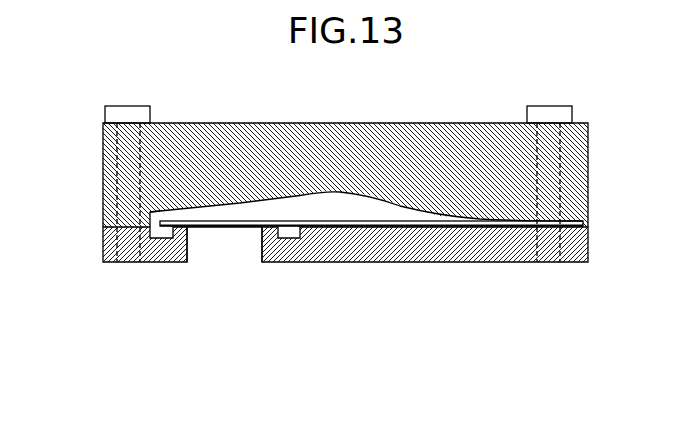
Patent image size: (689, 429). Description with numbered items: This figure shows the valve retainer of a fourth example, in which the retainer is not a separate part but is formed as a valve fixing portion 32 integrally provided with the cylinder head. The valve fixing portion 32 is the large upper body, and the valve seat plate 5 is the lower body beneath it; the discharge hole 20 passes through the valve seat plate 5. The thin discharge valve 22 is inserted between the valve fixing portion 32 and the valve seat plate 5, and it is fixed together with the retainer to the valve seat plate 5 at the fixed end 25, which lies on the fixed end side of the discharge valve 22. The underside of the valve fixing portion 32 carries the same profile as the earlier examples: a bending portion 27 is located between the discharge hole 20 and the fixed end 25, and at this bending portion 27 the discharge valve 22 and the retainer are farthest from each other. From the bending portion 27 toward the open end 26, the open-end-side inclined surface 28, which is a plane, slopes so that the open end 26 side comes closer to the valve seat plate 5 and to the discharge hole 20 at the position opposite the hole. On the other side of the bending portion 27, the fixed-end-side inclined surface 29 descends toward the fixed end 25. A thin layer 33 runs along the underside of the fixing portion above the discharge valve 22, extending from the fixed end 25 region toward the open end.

The valve fixing portion 32 is at (103, 148).
The valve seat plate 5 is at (440, 240).
The fixed end 25 is at (548, 117).
The thin film layer 33 is at (575, 219).
The open end 26 is at (165, 212).
The open-end-side inclined surface 28 is at (262, 202).
The bending portion 27 is at (300, 197).
The fixed-end-side inclined surface 29 is at (402, 207).
The discharge valve 22 is at (223, 226).
The discharge hole 20 is at (238, 248).